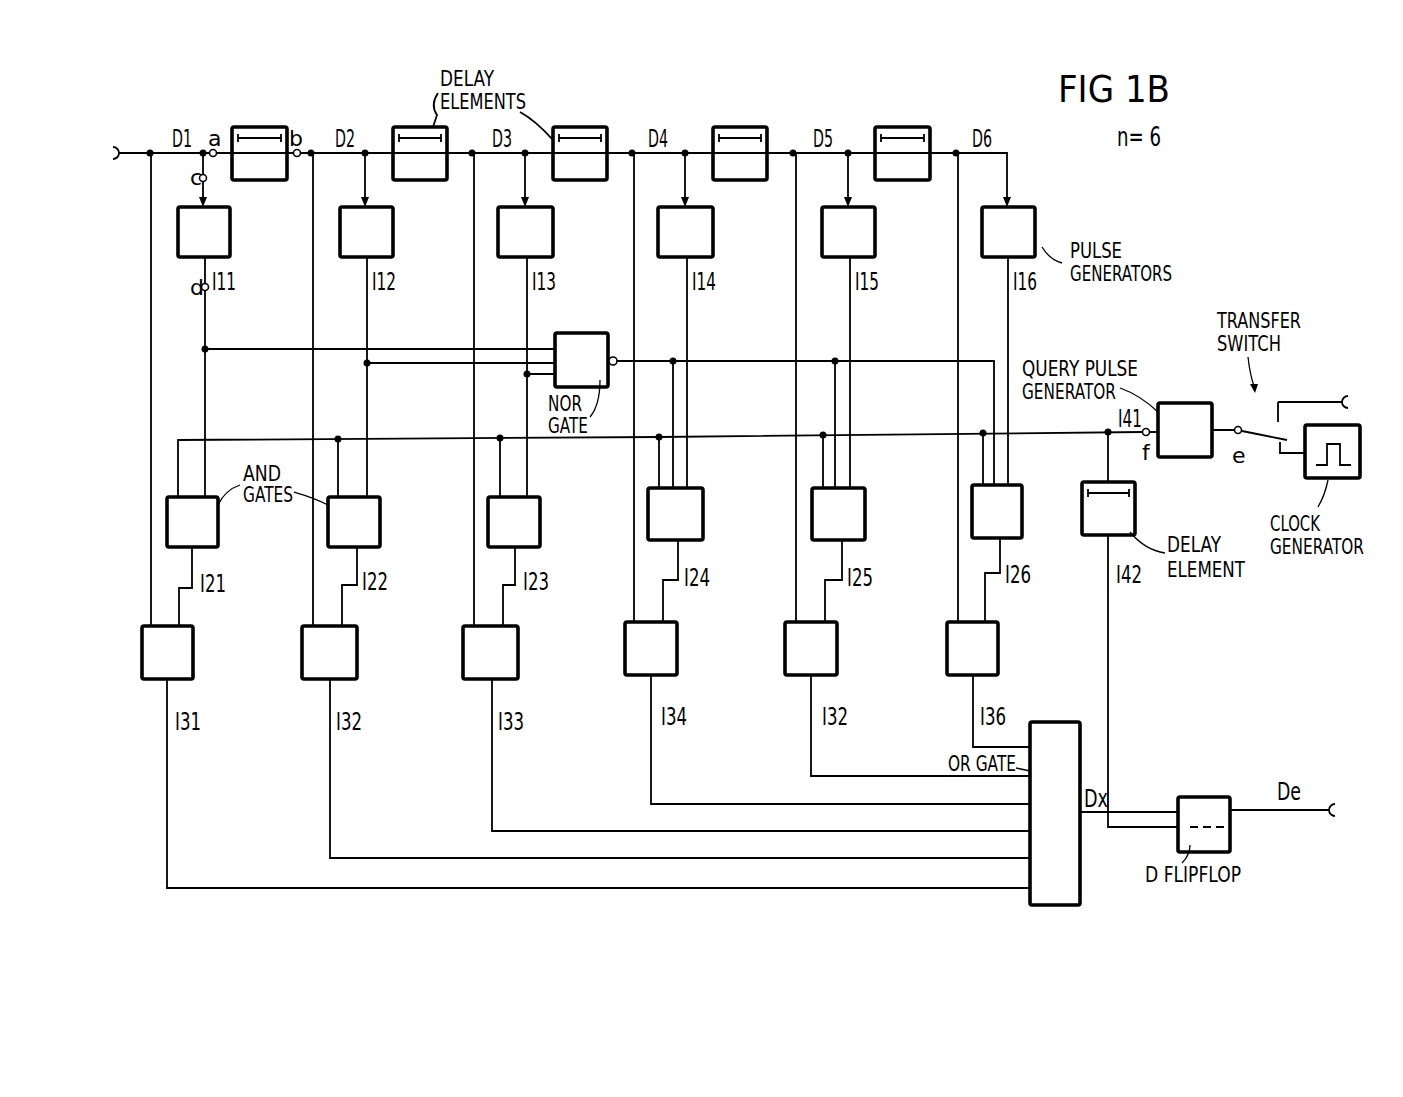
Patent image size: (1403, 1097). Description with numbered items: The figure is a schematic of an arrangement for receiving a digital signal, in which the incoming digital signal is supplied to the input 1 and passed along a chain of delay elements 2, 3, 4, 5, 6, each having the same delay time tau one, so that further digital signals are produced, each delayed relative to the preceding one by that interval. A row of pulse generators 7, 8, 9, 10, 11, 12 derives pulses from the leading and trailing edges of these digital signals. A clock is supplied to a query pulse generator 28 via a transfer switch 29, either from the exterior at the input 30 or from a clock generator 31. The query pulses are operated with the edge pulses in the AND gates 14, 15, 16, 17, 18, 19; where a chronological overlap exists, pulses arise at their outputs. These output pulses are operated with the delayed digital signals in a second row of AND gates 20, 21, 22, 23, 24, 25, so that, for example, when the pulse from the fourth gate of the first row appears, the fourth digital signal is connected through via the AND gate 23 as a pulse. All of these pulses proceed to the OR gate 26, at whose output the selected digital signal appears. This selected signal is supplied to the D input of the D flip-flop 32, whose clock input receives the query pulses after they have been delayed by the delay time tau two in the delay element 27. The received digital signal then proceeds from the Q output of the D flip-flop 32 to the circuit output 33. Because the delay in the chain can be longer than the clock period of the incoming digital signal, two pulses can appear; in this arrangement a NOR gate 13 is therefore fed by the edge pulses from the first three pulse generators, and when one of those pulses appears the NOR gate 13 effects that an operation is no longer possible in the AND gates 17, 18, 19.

The input 1 is at (117, 138).
The delay element 2 is at (259, 137).
The delay element 3 is at (420, 137).
The delay element 4 is at (580, 137).
The delay element 5 is at (740, 137).
The delay element 6 is at (902, 137).
The pulse generator 7 is at (213, 232).
The pulse generator 8 is at (375, 232).
The pulse generator 9 is at (534, 232).
The pulse generator 10 is at (700, 232).
The pulse generator 11 is at (862, 232).
The pulse generator 12 is at (1023, 232).
The NOR gate 13 is at (586, 343).
The AND gate 14 is at (206, 522).
The AND gate 15 is at (367, 522).
The AND gate 16 is at (528, 522).
The AND gate 17 is at (689, 515).
The AND gate 18 is at (852, 515).
The AND gate 19 is at (1011, 513).
The AND gate 20 is at (182, 652).
The AND gate 21 is at (343, 652).
The AND gate 22 is at (505, 652).
The AND gate 23 is at (665, 648).
The AND gate 24 is at (826, 648).
The AND gate 25 is at (987, 648).
The OR gate 26 is at (1053, 731).
The delay element 27 is at (1124, 509).
The query pulse generator 28 is at (1181, 416).
The transfer switch 29 is at (1292, 418).
The input 30 is at (1350, 386).
The clock generator 31 is at (1305, 491).
The D flip-flop 32 is at (1204, 809).
The circuit output 33 is at (1346, 811).